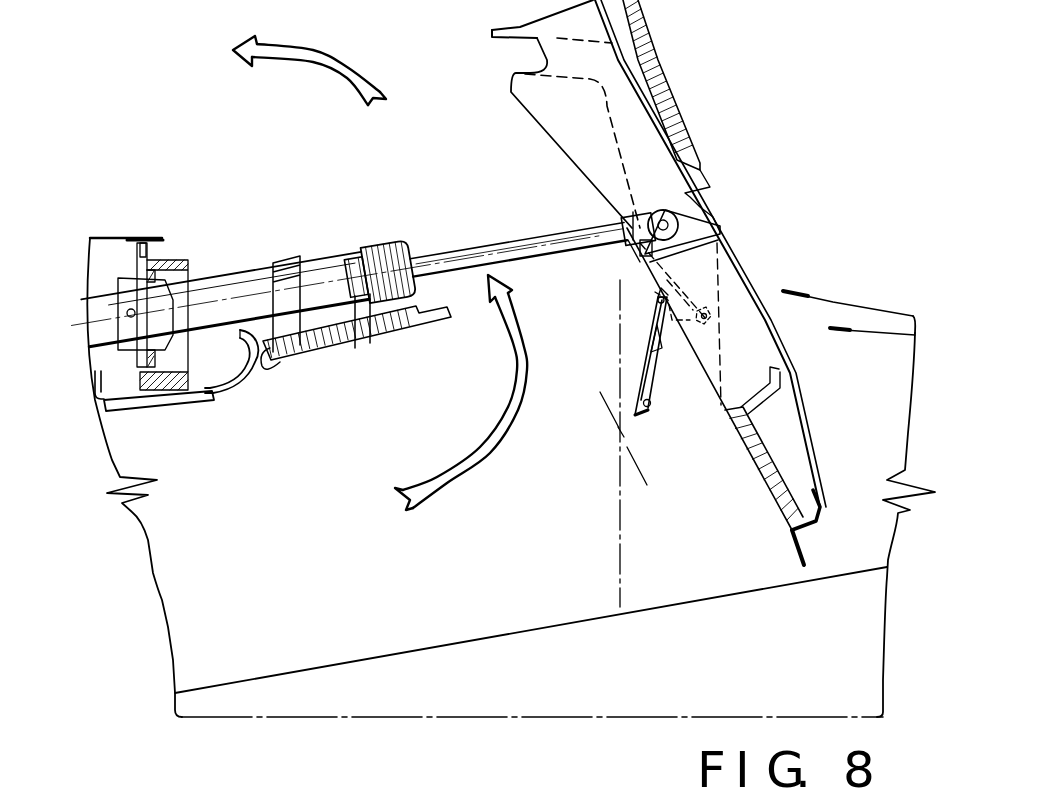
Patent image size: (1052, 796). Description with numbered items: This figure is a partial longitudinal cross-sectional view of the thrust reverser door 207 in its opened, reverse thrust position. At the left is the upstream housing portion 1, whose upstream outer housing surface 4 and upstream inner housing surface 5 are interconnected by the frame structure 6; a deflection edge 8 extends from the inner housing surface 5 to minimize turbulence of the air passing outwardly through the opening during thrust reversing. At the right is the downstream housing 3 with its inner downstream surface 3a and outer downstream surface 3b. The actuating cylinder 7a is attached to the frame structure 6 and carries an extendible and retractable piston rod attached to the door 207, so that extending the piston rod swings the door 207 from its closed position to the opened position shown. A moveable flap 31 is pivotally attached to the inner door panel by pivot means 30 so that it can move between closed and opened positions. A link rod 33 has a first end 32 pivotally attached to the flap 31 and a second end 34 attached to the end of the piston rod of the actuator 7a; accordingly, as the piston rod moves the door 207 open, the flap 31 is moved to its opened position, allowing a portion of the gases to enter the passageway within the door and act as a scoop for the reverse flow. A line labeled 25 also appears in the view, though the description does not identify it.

The upstream housing portion 1 is at (150, 234).
The downstream housing 3 is at (865, 316).
The inner downstream surface 3a is at (891, 338).
The outer downstream surface 3b is at (881, 308).
The upstream outer housing surface 4 is at (110, 237).
The upstream inner housing surface 5 is at (160, 404).
The frame structure 6 is at (176, 260).
The actuating cylinder 7a is at (322, 270).
The deflection edge 8 is at (245, 381).
The pivot axis 25 is at (622, 433).
The pivot means 30 is at (657, 298).
The flap 31 is at (650, 387).
The first end 32 is at (707, 318).
The link rod 33 is at (683, 284).
The second end 34 is at (630, 253).
The door 207 is at (688, 173).